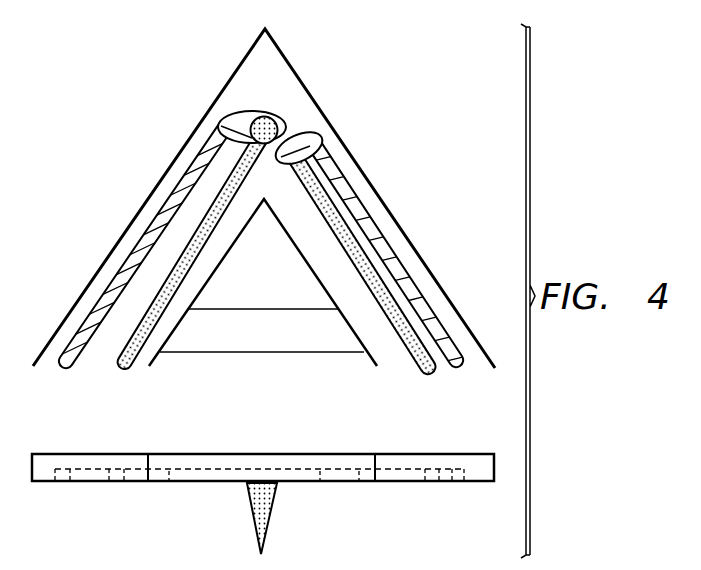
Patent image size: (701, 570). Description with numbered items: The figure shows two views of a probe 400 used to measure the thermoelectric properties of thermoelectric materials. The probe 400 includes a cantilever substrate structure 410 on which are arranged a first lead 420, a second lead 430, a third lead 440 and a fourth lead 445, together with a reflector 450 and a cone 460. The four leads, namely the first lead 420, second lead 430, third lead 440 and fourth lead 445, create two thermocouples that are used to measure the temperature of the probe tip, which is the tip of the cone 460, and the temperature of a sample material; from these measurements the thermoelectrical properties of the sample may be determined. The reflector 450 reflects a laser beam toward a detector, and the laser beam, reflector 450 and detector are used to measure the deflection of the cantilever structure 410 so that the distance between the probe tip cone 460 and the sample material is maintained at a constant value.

The probe 400 is at (264, 198).
The cantilever substrate structure 410 is at (333, 125).
The first lead 420 is at (60, 368).
The second lead 430 is at (117, 368).
The third lead 440 is at (432, 378).
The fourth lead 445 is at (460, 369).
The reflector 450 is at (261, 352).
The cone 460 is at (258, 116).